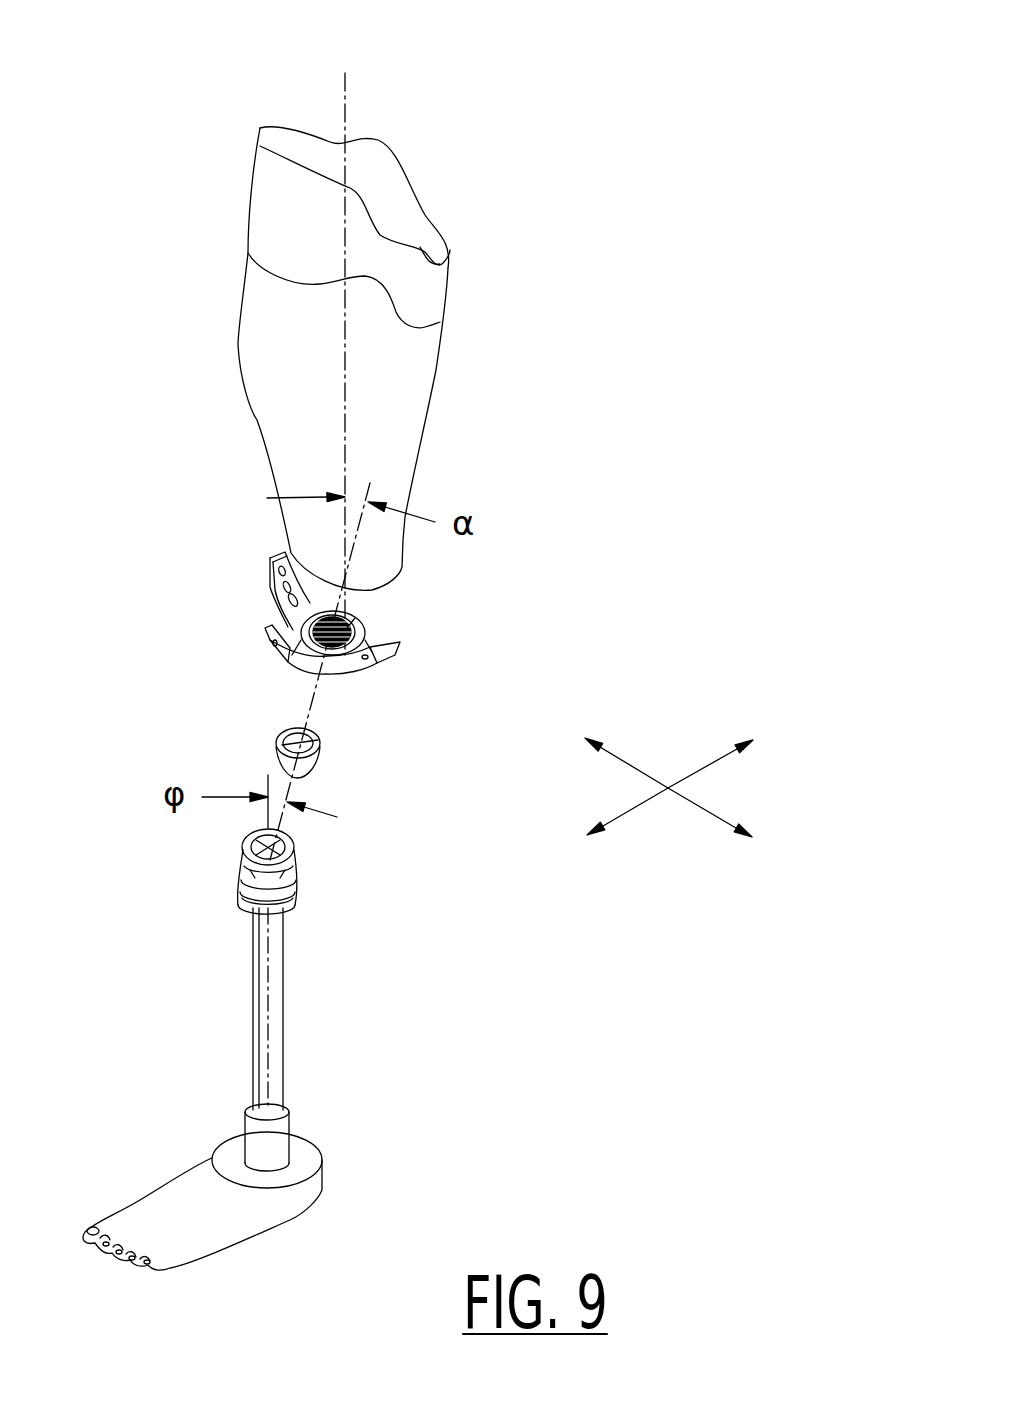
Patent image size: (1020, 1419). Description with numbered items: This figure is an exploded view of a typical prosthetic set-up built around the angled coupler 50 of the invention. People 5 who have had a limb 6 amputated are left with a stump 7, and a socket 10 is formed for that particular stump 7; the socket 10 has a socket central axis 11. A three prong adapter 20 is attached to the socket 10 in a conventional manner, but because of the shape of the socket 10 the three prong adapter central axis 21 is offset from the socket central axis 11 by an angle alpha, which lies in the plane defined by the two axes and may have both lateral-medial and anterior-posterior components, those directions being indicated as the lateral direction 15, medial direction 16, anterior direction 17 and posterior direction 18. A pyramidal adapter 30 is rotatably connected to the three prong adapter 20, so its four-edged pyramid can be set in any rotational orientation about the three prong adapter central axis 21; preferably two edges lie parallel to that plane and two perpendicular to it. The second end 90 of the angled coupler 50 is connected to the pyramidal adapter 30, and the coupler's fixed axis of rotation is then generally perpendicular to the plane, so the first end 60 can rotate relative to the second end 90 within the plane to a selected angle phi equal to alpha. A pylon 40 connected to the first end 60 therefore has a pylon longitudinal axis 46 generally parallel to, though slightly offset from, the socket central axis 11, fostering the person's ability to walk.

The people 5 is at (233, 179).
The limb 6 is at (448, 270).
The stump 7 is at (445, 293).
The socket 10 is at (222, 339).
The socket central axis 11 is at (345, 97).
The lateral direction 15 is at (734, 835).
The medial direction 16 is at (609, 742).
The anterior direction 17 is at (609, 831).
The posterior direction 18 is at (732, 742).
The three prong adapter 20 is at (247, 563).
The three prong adapter central axis 21 is at (320, 682).
The pyramidal adapter 30 is at (257, 738).
The pylon 40 is at (234, 1008).
The pylon longitudinal axis 46 is at (270, 1000).
The angled coupler 50 is at (216, 878).
The first end 60 is at (293, 853).
The second end 90 is at (290, 893).